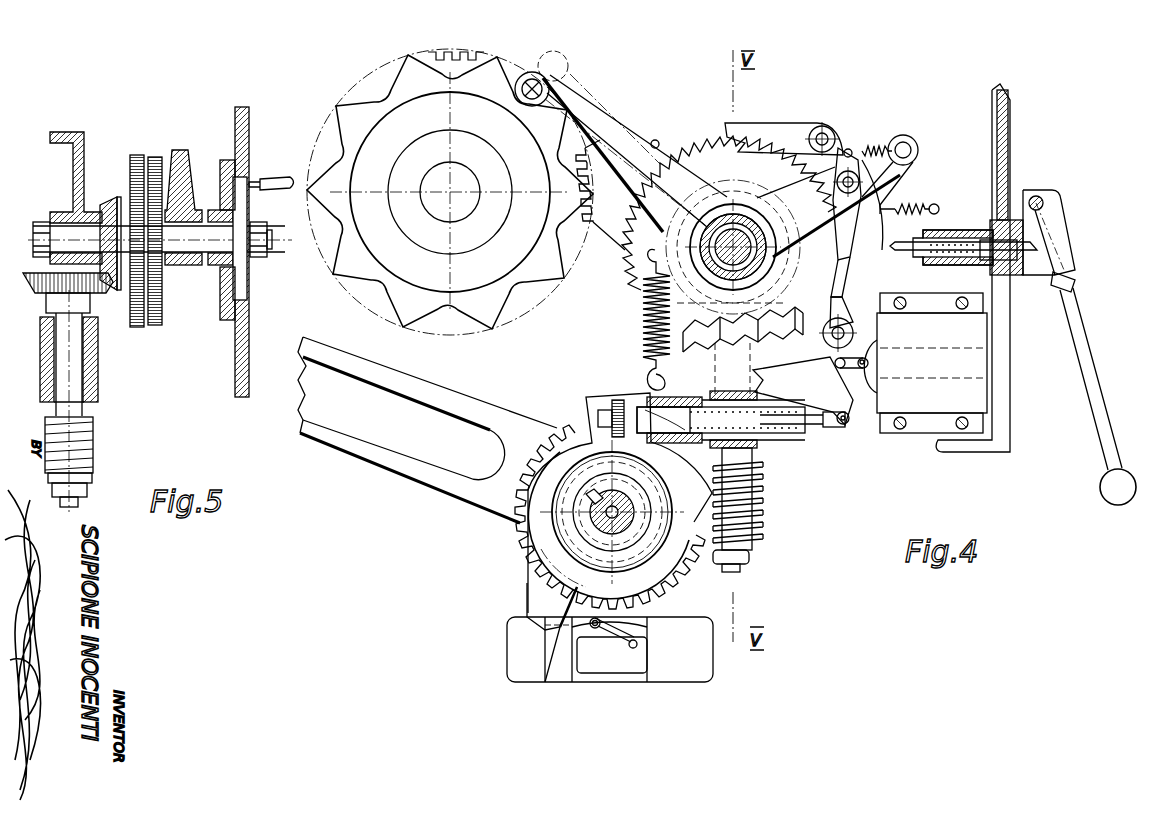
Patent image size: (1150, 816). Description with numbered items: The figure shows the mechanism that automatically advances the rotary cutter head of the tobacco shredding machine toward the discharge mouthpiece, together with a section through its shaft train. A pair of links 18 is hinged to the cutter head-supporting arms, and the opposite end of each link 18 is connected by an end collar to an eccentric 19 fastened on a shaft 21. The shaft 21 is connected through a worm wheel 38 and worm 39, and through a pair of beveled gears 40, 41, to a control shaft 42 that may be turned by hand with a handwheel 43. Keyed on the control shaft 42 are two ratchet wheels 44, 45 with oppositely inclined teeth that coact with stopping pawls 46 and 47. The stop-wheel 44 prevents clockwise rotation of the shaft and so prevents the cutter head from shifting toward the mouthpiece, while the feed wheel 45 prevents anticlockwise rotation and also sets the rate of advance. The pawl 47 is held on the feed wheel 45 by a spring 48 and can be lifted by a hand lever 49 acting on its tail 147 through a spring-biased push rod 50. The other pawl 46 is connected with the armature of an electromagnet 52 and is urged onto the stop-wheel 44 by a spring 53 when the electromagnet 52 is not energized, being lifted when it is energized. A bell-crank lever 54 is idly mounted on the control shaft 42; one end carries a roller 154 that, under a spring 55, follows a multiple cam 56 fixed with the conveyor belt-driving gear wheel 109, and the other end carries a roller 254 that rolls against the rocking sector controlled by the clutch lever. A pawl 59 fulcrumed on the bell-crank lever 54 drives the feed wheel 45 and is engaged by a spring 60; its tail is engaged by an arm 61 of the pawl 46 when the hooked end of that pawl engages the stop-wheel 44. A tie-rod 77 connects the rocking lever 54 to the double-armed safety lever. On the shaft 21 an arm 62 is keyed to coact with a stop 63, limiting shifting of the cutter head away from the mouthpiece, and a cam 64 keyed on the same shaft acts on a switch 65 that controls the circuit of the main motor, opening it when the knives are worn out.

In FIG. 4, the link 18 is at (362, 456).
In FIG. 4, the eccentric 19 is at (548, 528).
In FIG. 4, the shaft 21 is at (600, 525).
In FIG. 4, the worm wheel 38 is at (520, 490).
In FIG. 5, the worm 39 is at (93, 447).
In FIG. 4, the worm 39 is at (765, 520).
In FIG. 5, the beveled gear 40 is at (97, 290).
In FIG. 4, the beveled gear 40 is at (793, 262).
In FIG. 5, the beveled gear 41 is at (108, 205).
In FIG. 4, the beveled gear 41 is at (739, 192).
In FIG. 5, the control shaft 42 is at (214, 248).
In FIG. 4, the control shaft 42 is at (728, 242).
In FIG. 5, the handwheel 43 is at (249, 279).
In FIG. 5, the ratchet wheel (stop-wheel) 44 is at (136, 155).
In FIG. 4, the ratchet wheel (stop-wheel) 44 is at (743, 353).
In FIG. 5, the ratchet wheel (feed wheel) 45 is at (155, 326).
In FIG. 4, the ratchet wheel (feed wheel) 45 is at (708, 147).
In FIG. 4, the stopping pawl 46 is at (797, 375).
In FIG. 4, the stopping pawl 47 is at (783, 124).
In FIG. 4, the spring 48 is at (912, 199).
In FIG. 4, the hand lever 49 is at (1070, 318).
In FIG. 4, the push rod 50 is at (952, 229).
In FIG. 4, the electromagnet 52 is at (972, 393).
In FIG. 4, the spring 53 is at (770, 435).
In FIG. 5, the bell-crank lever 54 is at (186, 155).
In FIG. 4, the bell-crank lever 54 is at (614, 207).
In FIG. 4, the spring 55 is at (645, 318).
In FIG. 4, the multiple cam 56 is at (410, 305).
In FIG. 4, the pawl 59 is at (832, 240).
In FIG. 4, the spring 60 is at (868, 146).
In FIG. 4, the arm 61 is at (846, 300).
In FIG. 4, the arm 62 is at (540, 605).
In FIG. 4, the stop 63 is at (560, 648).
In FIG. 4, the cam 64 is at (605, 408).
In FIG. 4, the switch 65 is at (620, 650).
In FIG. 4, the tie-rod 77 is at (834, 200).
In FIG. 4, the conveyor belt-driving gear wheel 109 is at (332, 130).
In FIG. 4, the tail 147 is at (895, 246).
In FIG. 4, the roller 154 is at (551, 88).
In FIG. 4, the roller 254 is at (906, 135).